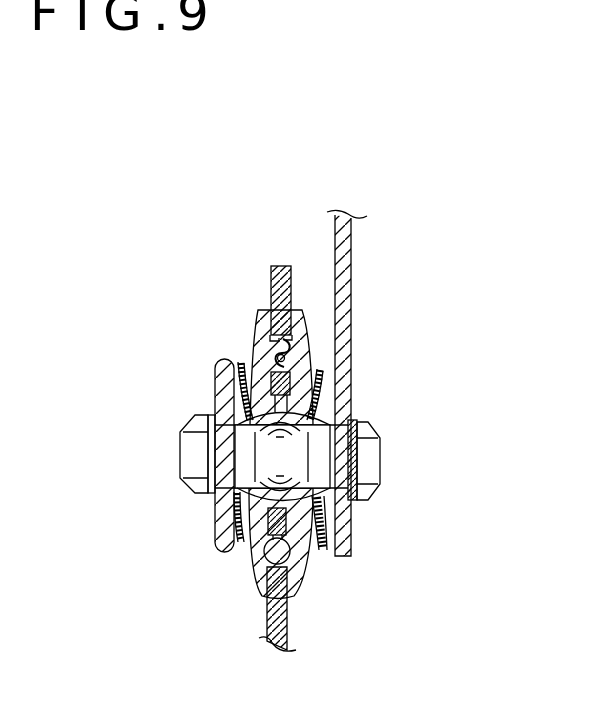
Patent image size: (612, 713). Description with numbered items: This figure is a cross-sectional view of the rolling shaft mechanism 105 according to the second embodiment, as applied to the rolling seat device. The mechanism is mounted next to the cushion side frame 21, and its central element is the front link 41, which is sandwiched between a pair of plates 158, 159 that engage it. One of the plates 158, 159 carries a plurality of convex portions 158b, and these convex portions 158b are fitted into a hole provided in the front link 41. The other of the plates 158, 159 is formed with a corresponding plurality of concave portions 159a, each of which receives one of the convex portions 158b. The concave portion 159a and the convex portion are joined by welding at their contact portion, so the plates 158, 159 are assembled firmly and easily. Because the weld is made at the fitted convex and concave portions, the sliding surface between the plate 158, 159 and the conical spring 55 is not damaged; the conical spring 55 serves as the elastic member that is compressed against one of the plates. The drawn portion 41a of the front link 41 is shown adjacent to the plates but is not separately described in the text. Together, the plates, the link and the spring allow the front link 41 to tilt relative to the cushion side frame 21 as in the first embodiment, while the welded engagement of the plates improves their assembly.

The rolling shaft mechanism 105 is at (271, 204).
The cushion side frame 21 is at (345, 296).
The front link 41 is at (284, 621).
The bracket arm 41a is at (245, 360).
The conical spring 55 is at (238, 358).
The plate 158 is at (258, 338).
The convex portion 158b is at (291, 365).
The plate 159 is at (302, 350).
The concave portion 159a is at (296, 358).